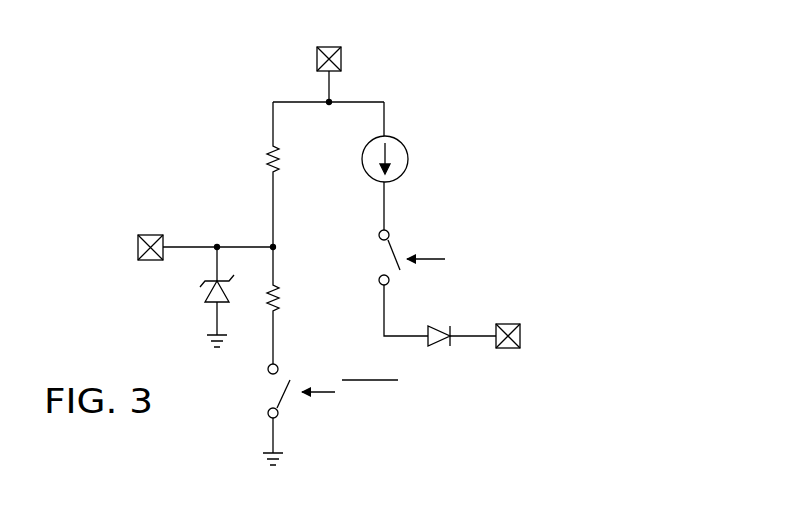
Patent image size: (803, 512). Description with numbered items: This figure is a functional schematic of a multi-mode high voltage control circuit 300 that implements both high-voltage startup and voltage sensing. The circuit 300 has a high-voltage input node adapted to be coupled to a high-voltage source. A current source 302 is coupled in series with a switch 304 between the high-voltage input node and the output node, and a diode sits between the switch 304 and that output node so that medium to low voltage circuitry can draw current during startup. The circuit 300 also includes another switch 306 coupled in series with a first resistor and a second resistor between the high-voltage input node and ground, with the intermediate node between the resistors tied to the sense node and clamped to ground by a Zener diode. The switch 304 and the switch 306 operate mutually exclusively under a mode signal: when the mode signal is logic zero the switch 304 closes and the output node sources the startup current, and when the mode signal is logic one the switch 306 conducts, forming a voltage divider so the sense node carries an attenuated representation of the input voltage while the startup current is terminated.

The multi-mode high voltage control circuit 300 is at (189, 100).
The current source 302 is at (401, 141).
The switch 304 is at (390, 253).
The switch 306 is at (283, 394).